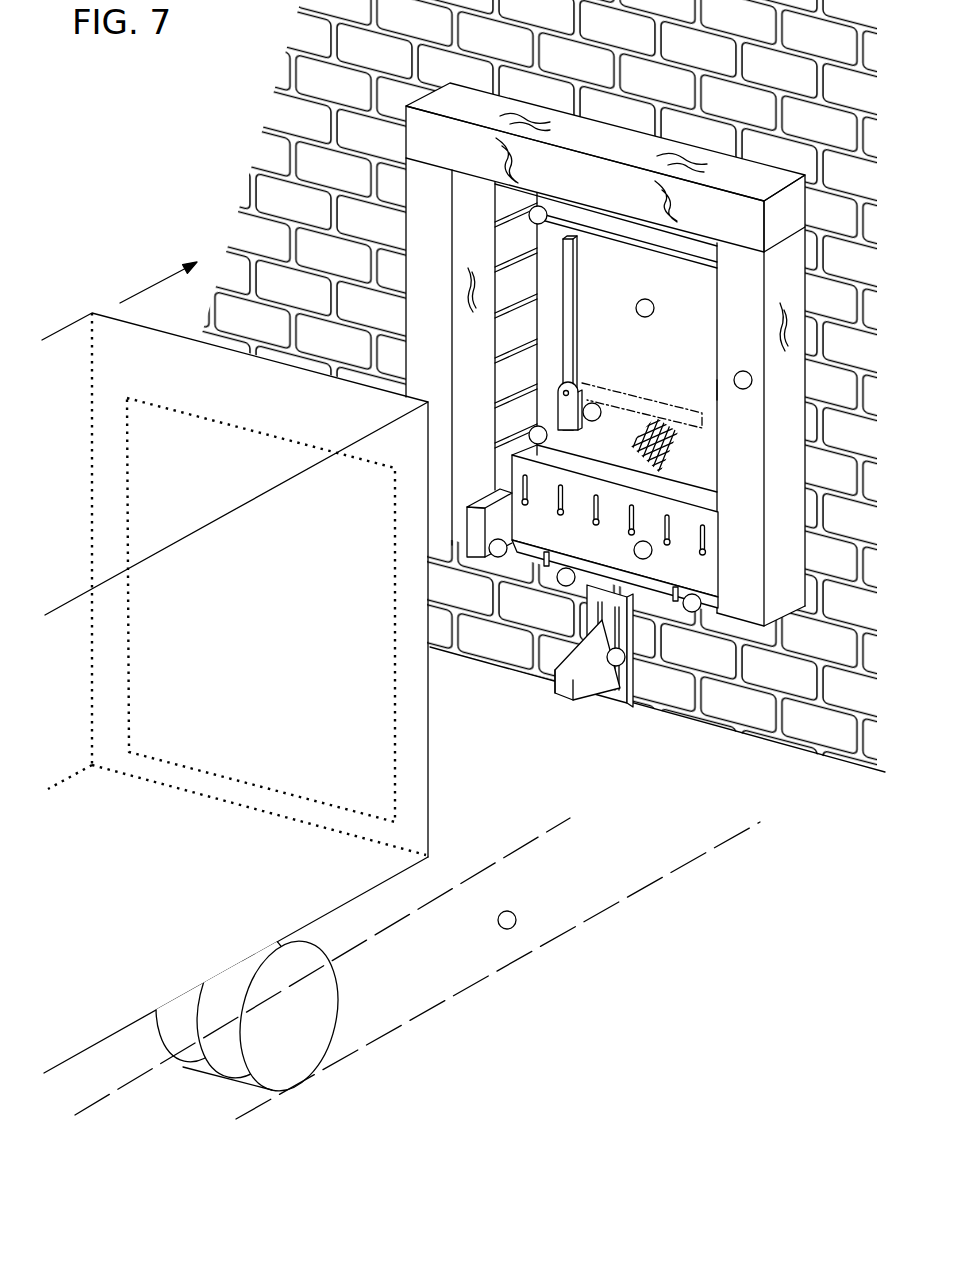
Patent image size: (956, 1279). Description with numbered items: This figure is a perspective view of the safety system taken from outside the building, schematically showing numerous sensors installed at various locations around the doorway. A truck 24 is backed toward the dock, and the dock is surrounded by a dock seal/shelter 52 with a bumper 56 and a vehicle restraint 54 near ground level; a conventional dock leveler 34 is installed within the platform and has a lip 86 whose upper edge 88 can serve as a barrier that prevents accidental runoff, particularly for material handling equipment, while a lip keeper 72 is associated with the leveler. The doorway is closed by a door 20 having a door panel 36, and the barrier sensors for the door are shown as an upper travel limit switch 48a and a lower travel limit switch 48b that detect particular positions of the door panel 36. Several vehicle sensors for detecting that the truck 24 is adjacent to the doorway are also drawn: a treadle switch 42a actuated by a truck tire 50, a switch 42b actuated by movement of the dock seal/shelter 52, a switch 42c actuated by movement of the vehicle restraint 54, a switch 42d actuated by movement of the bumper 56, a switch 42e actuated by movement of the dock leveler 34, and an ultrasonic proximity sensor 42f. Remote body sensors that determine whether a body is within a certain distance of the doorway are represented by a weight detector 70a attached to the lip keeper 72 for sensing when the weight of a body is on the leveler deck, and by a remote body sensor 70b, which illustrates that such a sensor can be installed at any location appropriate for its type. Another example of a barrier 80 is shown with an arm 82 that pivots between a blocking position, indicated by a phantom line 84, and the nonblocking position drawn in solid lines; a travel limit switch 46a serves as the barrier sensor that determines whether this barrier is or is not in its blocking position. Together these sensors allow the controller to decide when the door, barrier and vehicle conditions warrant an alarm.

The door 20 is at (722, 282).
The truck 24 is at (55, 333).
The dock leveler 34 is at (716, 390).
The door panel 36 is at (667, 252).
The treadle switch 42a is at (512, 908).
The switch actuated by movement of a dock seal/shelter 42b is at (742, 370).
The switch actuated by movement of a vehicle restraint 42c is at (607, 670).
The switch actuated by movement of a bumper 42d is at (502, 562).
The switch actuated by movement of dock leveler 42e is at (643, 540).
The ultrasonic proximity sensor 42f is at (560, 588).
The travel limit switch 46a is at (600, 416).
The upper travel limit switch 48a is at (503, 240).
The lower travel limit switch 48b is at (533, 432).
The truck tire 50 is at (336, 1021).
The dock seal/shelter 52 is at (790, 283).
The vehicle restraint 54 is at (583, 701).
The bumper 56 is at (468, 522).
The weight detector 70a is at (698, 614).
The remote body sensor 70b is at (636, 304).
The lip keeper 72 is at (678, 572).
The barrier 80 is at (580, 380).
The arm 82 is at (570, 302).
The phantom line 84 is at (693, 410).
The lip 86 is at (688, 527).
The upper edge 88 is at (570, 470).